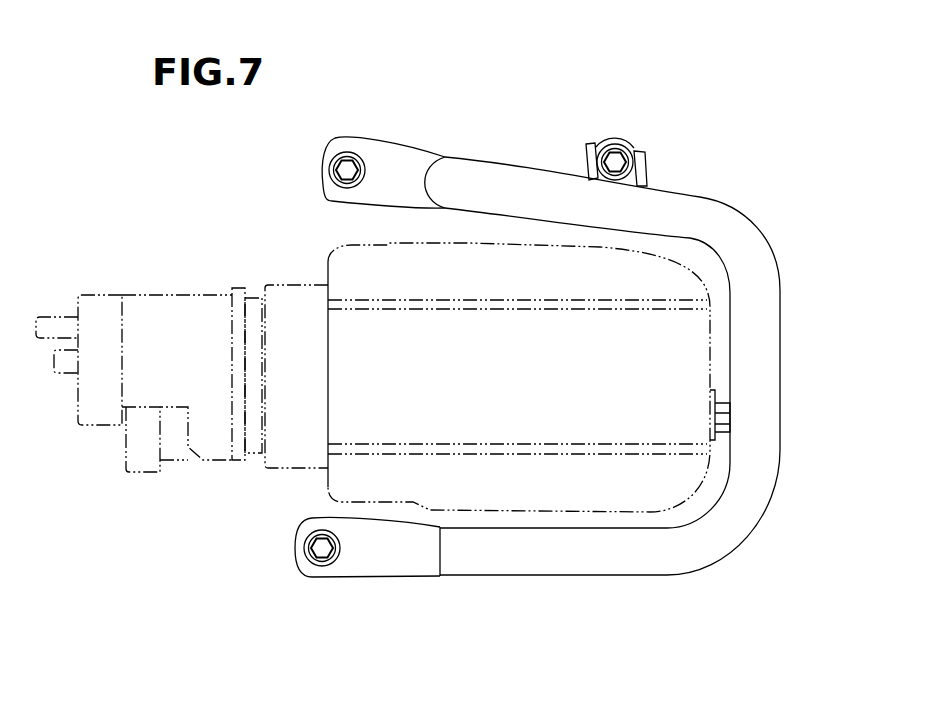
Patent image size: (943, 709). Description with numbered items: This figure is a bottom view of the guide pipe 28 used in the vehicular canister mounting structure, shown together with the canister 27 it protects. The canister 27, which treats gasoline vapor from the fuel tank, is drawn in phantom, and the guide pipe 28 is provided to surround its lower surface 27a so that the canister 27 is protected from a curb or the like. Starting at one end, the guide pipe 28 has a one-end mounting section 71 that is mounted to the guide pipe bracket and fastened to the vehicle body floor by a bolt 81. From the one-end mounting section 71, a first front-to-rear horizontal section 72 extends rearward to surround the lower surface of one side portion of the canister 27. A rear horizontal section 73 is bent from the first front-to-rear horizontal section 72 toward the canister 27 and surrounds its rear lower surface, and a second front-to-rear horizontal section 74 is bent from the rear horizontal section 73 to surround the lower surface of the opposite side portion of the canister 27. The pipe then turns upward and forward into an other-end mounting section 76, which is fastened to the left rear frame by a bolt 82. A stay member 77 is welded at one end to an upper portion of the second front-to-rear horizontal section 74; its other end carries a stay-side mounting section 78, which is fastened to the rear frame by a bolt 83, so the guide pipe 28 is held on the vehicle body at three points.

The vehicular canister 27 is at (212, 282).
The lower surface of the canister 27a is at (667, 277).
The guide pipe 28 is at (507, 148).
The one-end mounting section 71 is at (357, 582).
The first front-to-rear horizontal section 72 is at (528, 563).
The rear horizontal section 73 is at (770, 350).
The second front-to-rear horizontal section 74 is at (537, 185).
The other-end mounting section 76 is at (385, 140).
The stay member 77 is at (598, 142).
The stay-side mounting section 78 is at (641, 152).
The bolt 81 is at (322, 555).
The bolt 82 is at (349, 164).
The bolt 83 is at (622, 145).